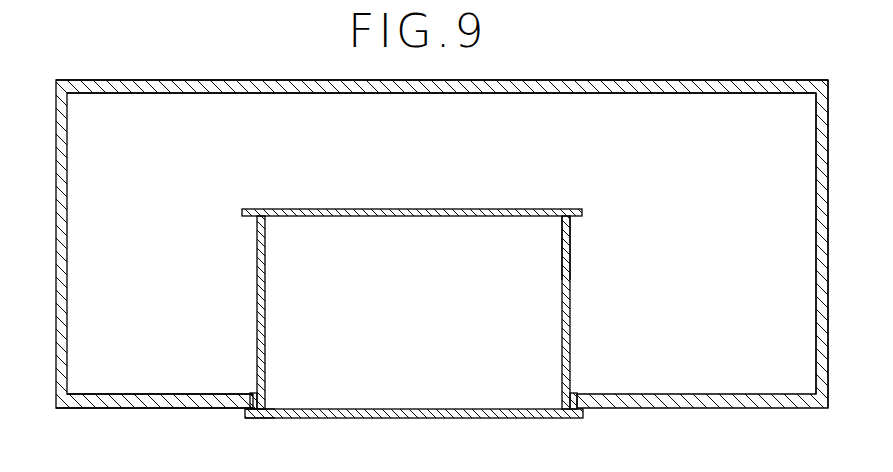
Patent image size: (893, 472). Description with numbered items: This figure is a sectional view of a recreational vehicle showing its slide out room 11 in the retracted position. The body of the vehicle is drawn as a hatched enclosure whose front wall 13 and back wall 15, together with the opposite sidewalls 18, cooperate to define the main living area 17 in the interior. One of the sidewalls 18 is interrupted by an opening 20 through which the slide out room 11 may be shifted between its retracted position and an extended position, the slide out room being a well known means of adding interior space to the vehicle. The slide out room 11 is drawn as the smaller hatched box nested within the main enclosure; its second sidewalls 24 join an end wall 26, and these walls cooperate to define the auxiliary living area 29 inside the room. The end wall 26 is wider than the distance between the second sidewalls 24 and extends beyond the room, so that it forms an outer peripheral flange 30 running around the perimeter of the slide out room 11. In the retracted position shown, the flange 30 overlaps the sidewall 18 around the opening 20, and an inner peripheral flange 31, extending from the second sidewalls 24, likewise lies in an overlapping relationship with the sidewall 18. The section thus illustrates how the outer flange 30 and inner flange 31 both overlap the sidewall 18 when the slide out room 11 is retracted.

The front wall 13 is at (58, 82).
The main living area 17 is at (698, 117).
The back wall 15 is at (828, 384).
The sidewall 18 is at (170, 409).
The slide out room 11 is at (418, 326).
The inner peripheral flange 31 is at (582, 212).
The second sidewalls 24 is at (256, 254).
The auxiliary living area 29 is at (552, 258).
The end wall 26 is at (540, 418).
The opening 20 is at (254, 397).
The outer peripheral flange 30 is at (245, 413).